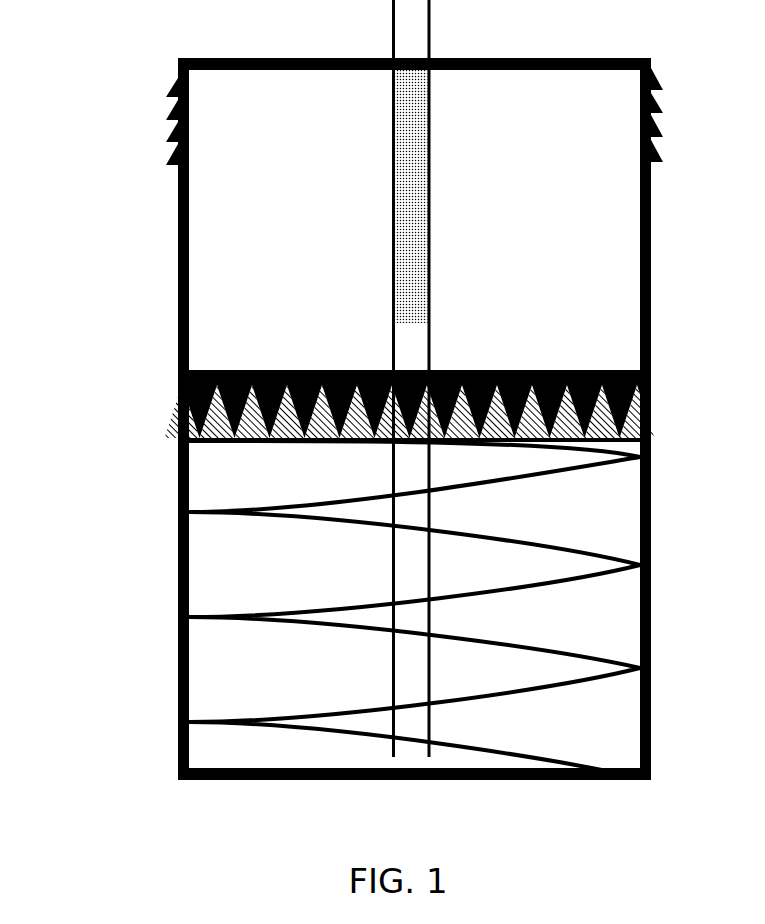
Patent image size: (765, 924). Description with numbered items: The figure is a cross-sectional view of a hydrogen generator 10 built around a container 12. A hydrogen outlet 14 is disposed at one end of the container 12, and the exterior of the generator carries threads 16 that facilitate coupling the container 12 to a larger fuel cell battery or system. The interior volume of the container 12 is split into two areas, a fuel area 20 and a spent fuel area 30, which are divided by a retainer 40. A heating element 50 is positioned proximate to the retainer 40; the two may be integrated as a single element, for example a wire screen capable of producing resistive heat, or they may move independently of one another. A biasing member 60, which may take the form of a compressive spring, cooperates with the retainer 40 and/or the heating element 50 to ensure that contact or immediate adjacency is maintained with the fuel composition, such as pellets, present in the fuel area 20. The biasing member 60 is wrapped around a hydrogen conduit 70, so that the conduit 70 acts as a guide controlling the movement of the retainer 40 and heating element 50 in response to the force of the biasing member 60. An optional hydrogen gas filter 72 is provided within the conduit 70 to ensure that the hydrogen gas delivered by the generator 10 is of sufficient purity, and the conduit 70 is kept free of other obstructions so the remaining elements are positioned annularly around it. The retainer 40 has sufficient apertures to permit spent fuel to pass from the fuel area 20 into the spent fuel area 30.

The hydrogen generator 10 is at (348, 411).
The container 12 is at (178, 262).
The hydrogen outlet 14 is at (413, 14).
The threads 16 is at (172, 128).
The fuel area 20 is at (412, 246).
The spent fuel area 30 is at (416, 600).
The retainer 40 is at (237, 372).
The heating element 50 is at (227, 442).
The biasing member 60 is at (262, 633).
The hydrogen conduit 70 is at (392, 572).
The hydrogen gas filter 72 is at (413, 163).